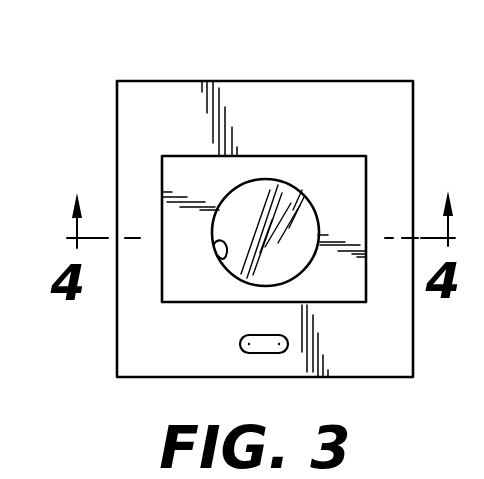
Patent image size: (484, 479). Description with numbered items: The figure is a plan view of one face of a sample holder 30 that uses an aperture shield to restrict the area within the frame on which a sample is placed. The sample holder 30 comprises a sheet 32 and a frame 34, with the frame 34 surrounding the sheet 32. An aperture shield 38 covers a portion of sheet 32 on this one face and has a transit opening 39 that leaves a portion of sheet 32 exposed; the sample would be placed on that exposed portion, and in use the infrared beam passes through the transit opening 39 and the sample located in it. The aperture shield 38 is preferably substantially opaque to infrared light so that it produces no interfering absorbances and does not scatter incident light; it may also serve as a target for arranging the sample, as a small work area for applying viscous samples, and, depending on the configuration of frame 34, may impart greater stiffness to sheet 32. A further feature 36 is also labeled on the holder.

The sample holder 30 is at (272, 217).
The sheet 32 is at (295, 193).
The frame 34 is at (270, 95).
The slot 36 is at (271, 353).
The aperture shield 38 is at (187, 170).
The transit opening 39 is at (226, 256).